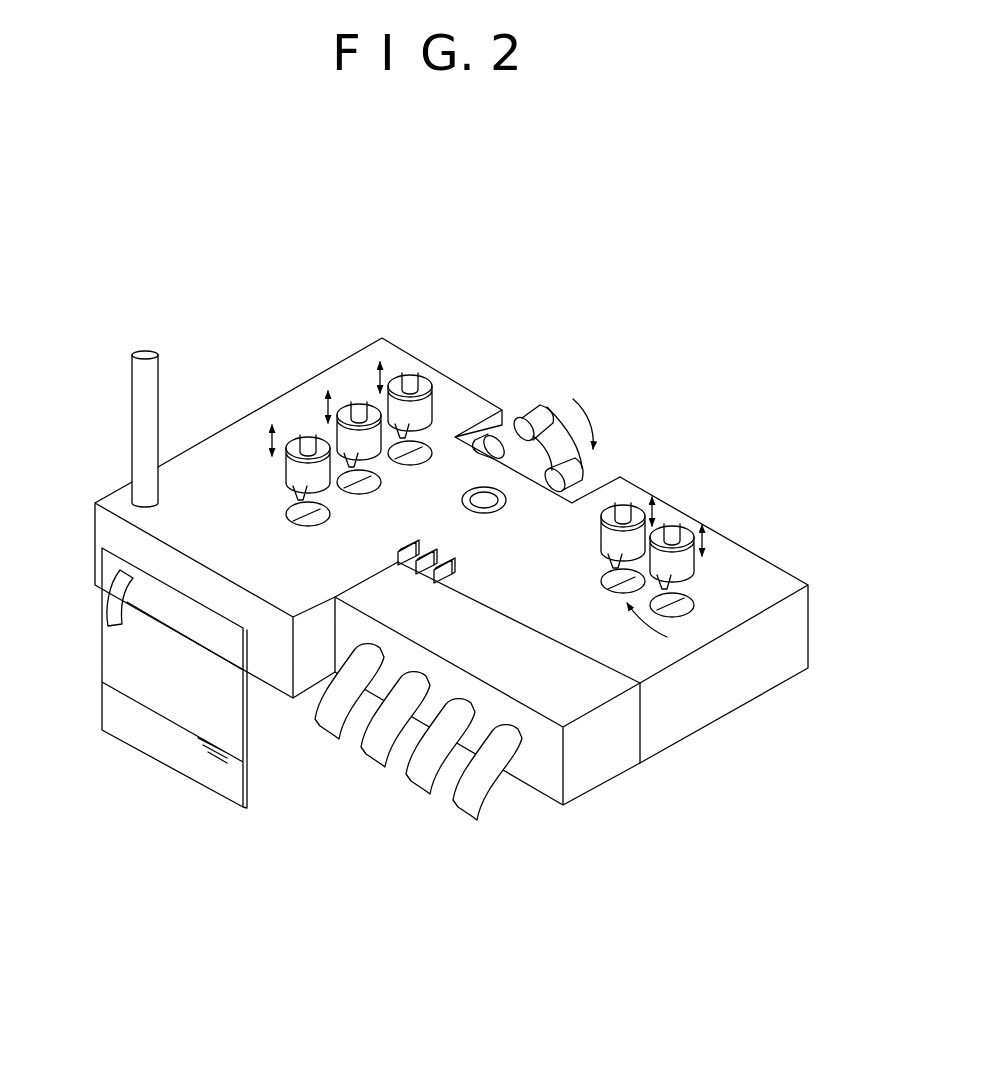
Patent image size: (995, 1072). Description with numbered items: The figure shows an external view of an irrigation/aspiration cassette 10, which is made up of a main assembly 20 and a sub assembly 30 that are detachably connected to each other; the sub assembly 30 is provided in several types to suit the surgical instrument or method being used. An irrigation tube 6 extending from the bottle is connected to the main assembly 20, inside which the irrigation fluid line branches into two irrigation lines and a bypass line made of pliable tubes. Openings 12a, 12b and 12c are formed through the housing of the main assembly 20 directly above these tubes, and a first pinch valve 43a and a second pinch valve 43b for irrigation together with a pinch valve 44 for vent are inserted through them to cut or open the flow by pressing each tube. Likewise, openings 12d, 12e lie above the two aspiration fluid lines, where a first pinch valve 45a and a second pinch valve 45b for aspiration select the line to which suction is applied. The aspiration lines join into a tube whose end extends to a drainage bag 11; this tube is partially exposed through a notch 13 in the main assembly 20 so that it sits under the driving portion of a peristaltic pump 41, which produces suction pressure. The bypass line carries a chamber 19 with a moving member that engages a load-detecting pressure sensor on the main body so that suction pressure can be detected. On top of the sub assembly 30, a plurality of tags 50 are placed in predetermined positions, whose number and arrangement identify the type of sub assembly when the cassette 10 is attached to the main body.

The irrigation tube 6 is at (143, 455).
The irrigation/aspiration cassette 10 is at (693, 832).
The drainage bag 11 is at (163, 698).
The opening 12a is at (278, 512).
The opening 12b is at (343, 510).
The opening 12c is at (440, 442).
The opening 12d is at (693, 651).
The opening 12e is at (702, 602).
The notch 13 is at (602, 477).
The chamber 19 is at (468, 476).
The main assembly 20 is at (680, 707).
The sub assembly 30 is at (595, 753).
The peristaltic pump 41 is at (528, 394).
The first pinch valve 43a is at (305, 425).
The second pinch valve 43b is at (358, 395).
The pinch valve 44 is at (407, 368).
The first pinch valve 45a is at (632, 482).
The second pinch valve 45b is at (674, 515).
The tag 50 is at (447, 585).